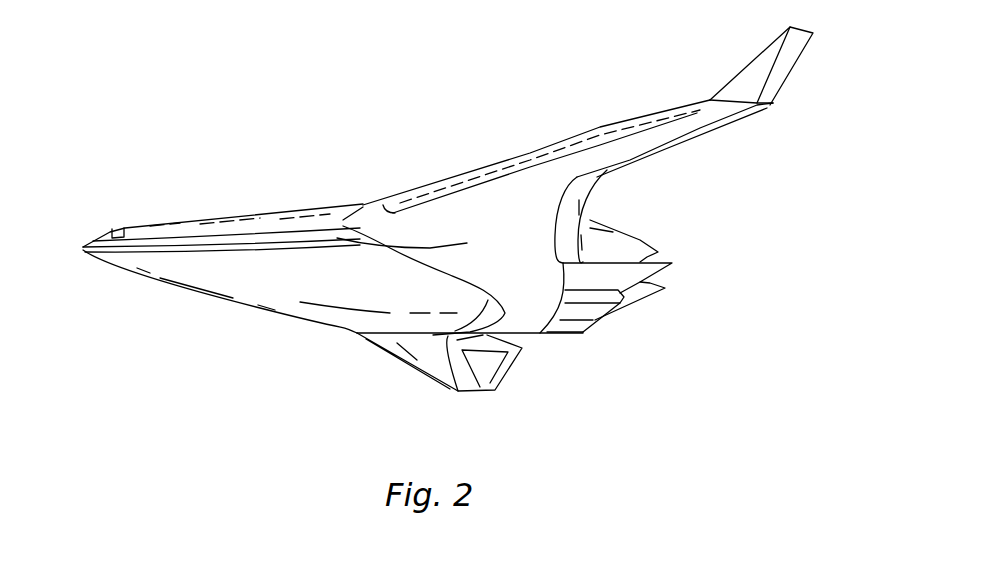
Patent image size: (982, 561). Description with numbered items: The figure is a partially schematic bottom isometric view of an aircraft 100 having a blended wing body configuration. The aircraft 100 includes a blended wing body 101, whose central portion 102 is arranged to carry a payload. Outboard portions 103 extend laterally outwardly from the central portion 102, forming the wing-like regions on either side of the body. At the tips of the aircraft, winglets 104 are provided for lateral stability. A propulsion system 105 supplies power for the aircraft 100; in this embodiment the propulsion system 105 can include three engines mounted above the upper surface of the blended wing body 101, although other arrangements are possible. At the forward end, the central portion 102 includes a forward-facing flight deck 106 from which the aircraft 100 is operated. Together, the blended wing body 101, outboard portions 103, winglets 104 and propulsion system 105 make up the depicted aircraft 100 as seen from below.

The aircraft 100 is at (296, 103).
The blended wing body 101 is at (330, 352).
The central portion 102 is at (250, 213).
The outboard portions 103 is at (520, 152).
The winglets 104 is at (763, 53).
The propulsion system 105 is at (642, 209).
The flight deck 106 is at (110, 228).